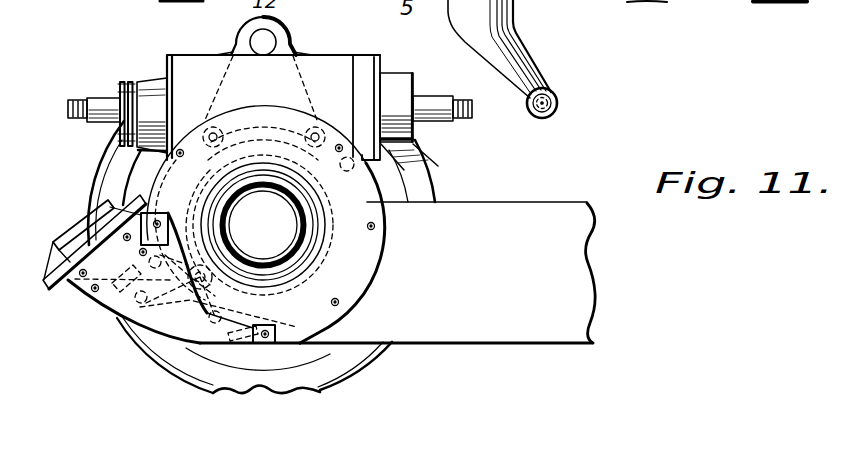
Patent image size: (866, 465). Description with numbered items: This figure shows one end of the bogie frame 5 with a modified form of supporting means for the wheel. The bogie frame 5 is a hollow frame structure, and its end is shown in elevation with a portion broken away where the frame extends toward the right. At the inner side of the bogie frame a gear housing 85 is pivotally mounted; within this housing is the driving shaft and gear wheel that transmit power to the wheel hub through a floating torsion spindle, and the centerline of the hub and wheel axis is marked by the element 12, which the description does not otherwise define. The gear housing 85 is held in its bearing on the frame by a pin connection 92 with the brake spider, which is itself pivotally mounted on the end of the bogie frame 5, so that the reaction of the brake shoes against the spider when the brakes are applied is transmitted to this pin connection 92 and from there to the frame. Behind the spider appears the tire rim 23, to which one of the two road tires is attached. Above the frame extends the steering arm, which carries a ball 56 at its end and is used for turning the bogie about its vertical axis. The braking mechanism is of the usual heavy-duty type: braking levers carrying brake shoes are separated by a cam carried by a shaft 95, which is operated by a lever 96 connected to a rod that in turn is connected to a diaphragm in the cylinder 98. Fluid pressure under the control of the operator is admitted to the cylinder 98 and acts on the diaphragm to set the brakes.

The bogie frame 5 is at (447, 272).
The axle / hub axis 12 is at (263, 0).
The tire rim 23 is at (428, 158).
The ball 56 is at (557, 104).
The gear housing 85 is at (337, 76).
The pin connection 92 is at (270, 42).
The shaft 95 is at (238, 342).
The lever 96 is at (197, 300).
The cylinder 98 is at (93, 235).